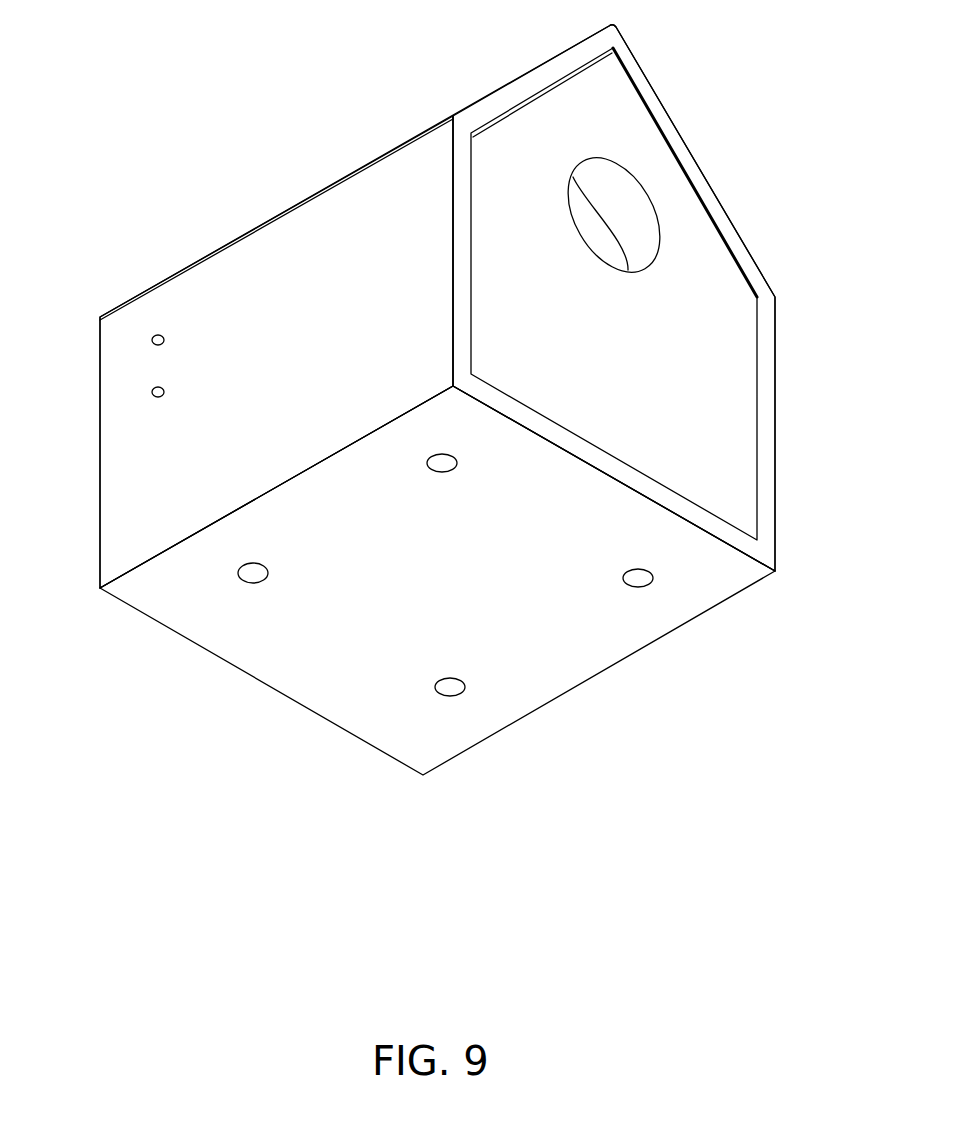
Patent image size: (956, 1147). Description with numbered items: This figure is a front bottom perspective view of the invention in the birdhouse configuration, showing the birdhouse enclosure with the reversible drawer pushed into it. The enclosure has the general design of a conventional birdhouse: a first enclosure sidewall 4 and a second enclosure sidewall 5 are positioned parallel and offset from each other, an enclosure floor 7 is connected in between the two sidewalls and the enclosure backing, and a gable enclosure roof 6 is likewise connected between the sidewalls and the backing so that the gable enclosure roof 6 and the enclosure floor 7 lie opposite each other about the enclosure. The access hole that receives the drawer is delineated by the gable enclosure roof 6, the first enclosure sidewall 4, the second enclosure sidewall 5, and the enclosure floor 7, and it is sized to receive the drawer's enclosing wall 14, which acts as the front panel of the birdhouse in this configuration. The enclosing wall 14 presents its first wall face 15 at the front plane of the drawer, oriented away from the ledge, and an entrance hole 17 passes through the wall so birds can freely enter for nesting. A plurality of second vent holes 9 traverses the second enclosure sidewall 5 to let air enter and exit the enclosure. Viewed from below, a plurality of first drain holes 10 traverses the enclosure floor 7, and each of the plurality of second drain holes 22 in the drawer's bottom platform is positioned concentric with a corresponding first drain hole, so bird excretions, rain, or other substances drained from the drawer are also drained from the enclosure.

The first enclosure sidewall 4 is at (763, 487).
The second enclosure sidewall 5 is at (110, 488).
The gable enclosure roof 6 is at (545, 70).
The enclosure floor 7 is at (718, 588).
The plurality of second vent holes 9 is at (168, 340).
The plurality of first drain holes 10 is at (384, 621).
The enclosing wall 14 is at (740, 407).
The first wall face 15 is at (608, 355).
The entrance hole 17 is at (648, 232).
The plurality of second drain holes 22 is at (441, 474).